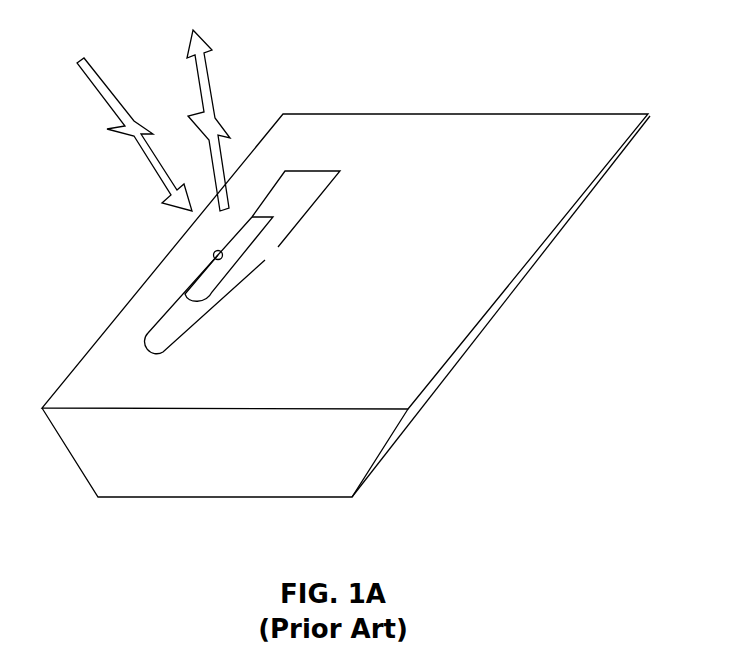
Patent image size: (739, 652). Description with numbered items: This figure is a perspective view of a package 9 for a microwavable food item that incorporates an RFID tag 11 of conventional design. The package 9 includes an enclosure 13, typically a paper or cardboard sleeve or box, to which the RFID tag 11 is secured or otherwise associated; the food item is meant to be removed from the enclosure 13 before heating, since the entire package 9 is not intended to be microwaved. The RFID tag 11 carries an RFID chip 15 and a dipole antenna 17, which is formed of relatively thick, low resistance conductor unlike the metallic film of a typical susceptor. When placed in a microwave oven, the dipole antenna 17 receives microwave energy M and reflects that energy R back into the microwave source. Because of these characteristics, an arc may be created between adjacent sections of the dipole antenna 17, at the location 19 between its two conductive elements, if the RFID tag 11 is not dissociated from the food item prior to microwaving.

The package 9 is at (458, 68).
The RFID tag 11 is at (157, 357).
The enclosure 13 is at (390, 375).
The RFID chip 15 is at (214, 253).
The dipole antenna 17 is at (313, 171).
The location between conductive elements of the dipole antenna 19 is at (273, 253).
The microwave energy M is at (138, 166).
The reflected microwave energy R is at (215, 88).